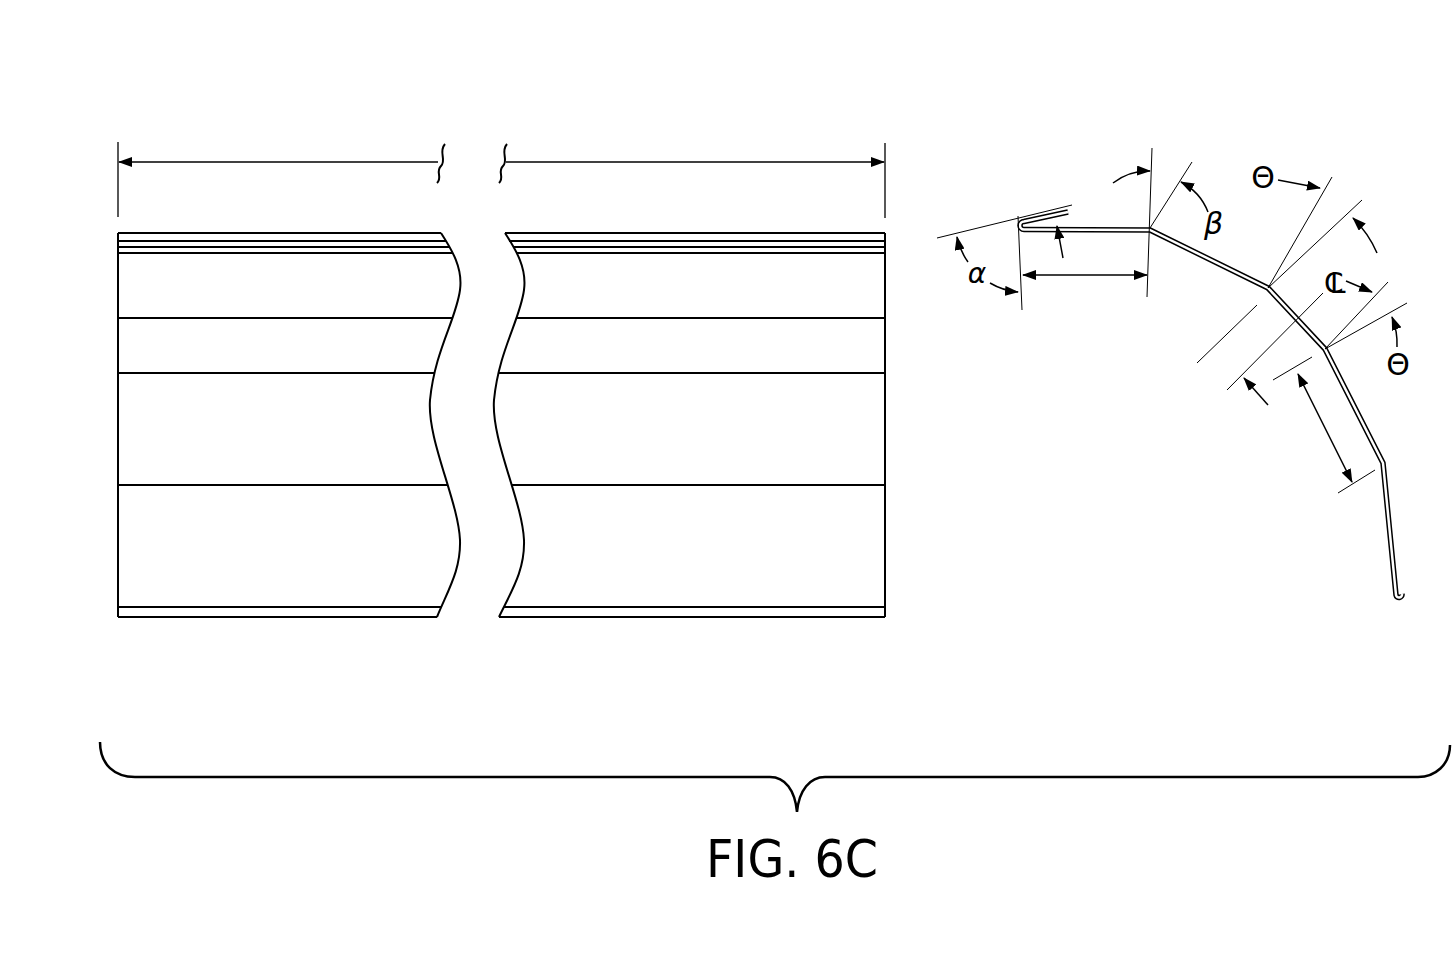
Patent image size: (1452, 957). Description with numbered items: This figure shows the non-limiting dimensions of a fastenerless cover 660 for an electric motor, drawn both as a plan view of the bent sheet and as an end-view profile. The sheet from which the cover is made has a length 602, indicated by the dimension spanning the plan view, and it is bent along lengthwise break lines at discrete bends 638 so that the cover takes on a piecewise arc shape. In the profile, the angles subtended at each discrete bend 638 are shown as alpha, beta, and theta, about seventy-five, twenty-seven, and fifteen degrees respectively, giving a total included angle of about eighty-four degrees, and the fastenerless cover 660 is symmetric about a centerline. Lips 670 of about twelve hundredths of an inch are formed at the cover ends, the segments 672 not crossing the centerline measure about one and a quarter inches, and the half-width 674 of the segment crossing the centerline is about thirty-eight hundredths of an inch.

The length 602 is at (200, 160).
The discrete bends 638 is at (822, 483).
The fastenerless cover 660 is at (840, 651).
The lips 670 is at (1052, 203).
The segments not crossing the centerline 672 is at (1072, 277).
The half-width of the segment crossing the centerline 674 is at (1210, 346).